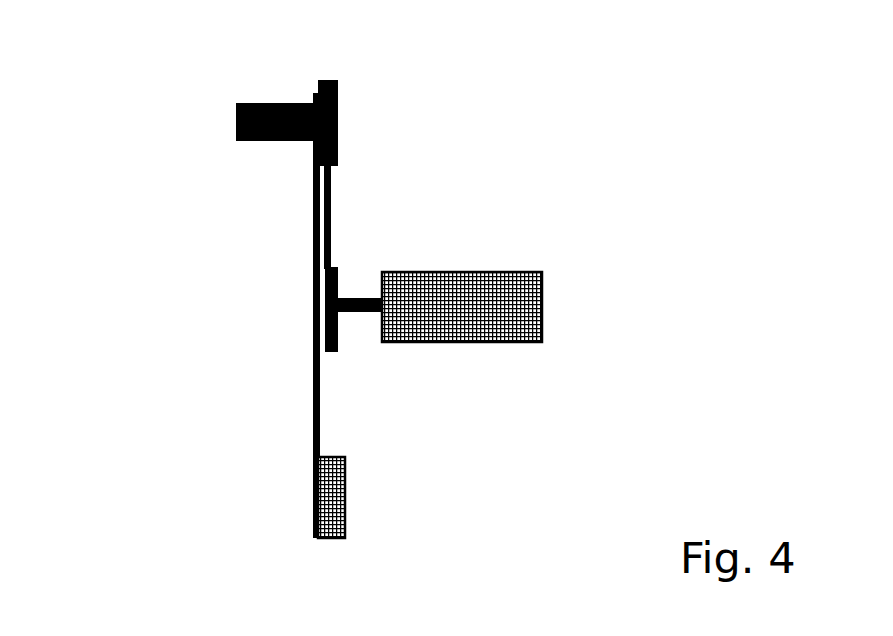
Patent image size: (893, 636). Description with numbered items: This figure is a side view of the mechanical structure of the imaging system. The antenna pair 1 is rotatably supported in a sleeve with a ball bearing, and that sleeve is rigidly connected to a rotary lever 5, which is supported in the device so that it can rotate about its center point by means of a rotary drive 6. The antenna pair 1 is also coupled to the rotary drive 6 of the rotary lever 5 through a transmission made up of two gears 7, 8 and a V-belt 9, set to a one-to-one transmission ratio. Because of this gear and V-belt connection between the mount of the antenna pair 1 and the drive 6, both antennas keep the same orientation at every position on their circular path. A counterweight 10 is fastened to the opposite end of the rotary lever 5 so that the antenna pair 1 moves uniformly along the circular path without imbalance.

The antenna pair 1 is at (260, 105).
The rotary lever 5 is at (312, 385).
The rotary drive 6 is at (485, 289).
The gear 7 is at (336, 95).
The gear 8 is at (338, 330).
The V-belt 9 is at (331, 207).
The counterweight 10 is at (318, 495).